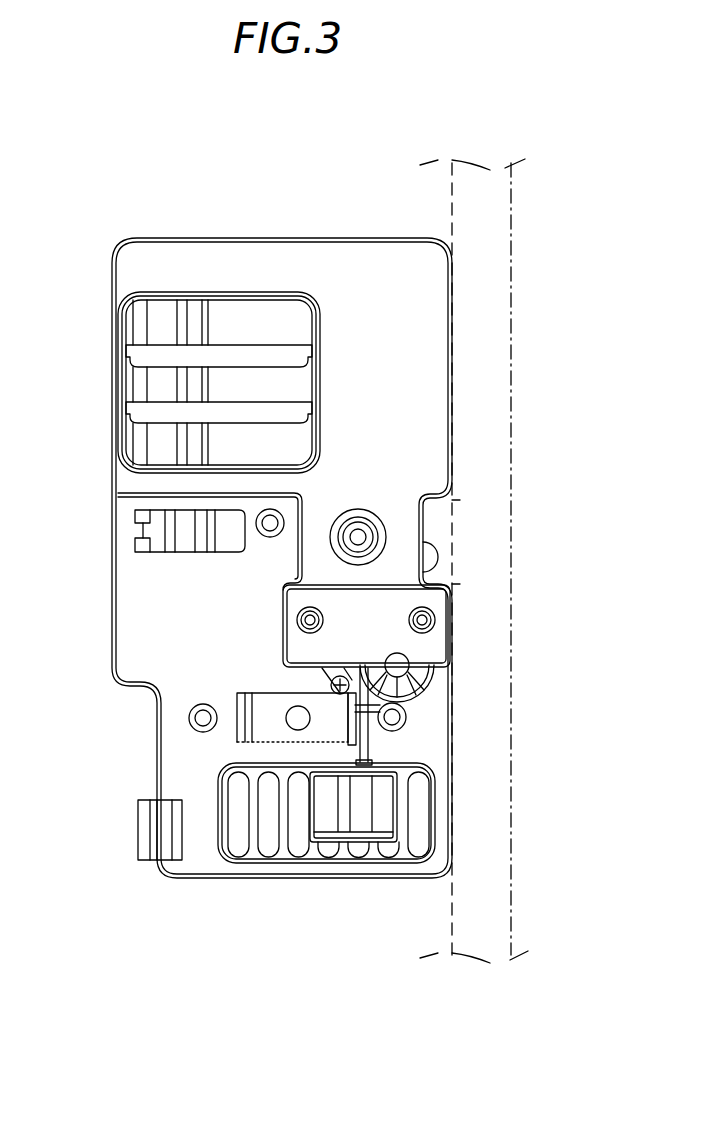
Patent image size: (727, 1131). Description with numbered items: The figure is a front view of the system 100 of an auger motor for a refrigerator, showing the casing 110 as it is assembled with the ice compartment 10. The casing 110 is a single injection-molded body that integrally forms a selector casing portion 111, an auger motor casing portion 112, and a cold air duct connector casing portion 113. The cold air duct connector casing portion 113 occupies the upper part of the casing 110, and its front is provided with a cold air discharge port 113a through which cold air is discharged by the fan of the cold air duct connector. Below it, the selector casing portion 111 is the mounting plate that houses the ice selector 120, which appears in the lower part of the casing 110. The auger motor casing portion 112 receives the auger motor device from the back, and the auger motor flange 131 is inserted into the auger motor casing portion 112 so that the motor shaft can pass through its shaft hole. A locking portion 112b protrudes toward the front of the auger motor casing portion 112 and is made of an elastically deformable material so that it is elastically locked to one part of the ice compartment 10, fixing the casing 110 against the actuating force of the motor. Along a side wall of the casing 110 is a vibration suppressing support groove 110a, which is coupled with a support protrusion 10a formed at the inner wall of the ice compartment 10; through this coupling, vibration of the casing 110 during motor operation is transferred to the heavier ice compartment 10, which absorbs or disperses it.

The system of an auger motor for a refrigerator 100 is at (102, 128).
The ice compartment 10 is at (498, 352).
The support protrusion 10a is at (428, 525).
The casing 110 is at (108, 481).
The vibration suppressing support groove 110a is at (420, 580).
The selector casing portion 111 is at (372, 645).
The auger motor casing portion 112 is at (260, 752).
The locking portion 112b is at (175, 852).
The cold air duct connector casing portion 113 is at (273, 258).
The cold air discharge port 113a is at (128, 389).
The ice selector 120 is at (388, 774).
The auger motor flange 131 is at (258, 697).